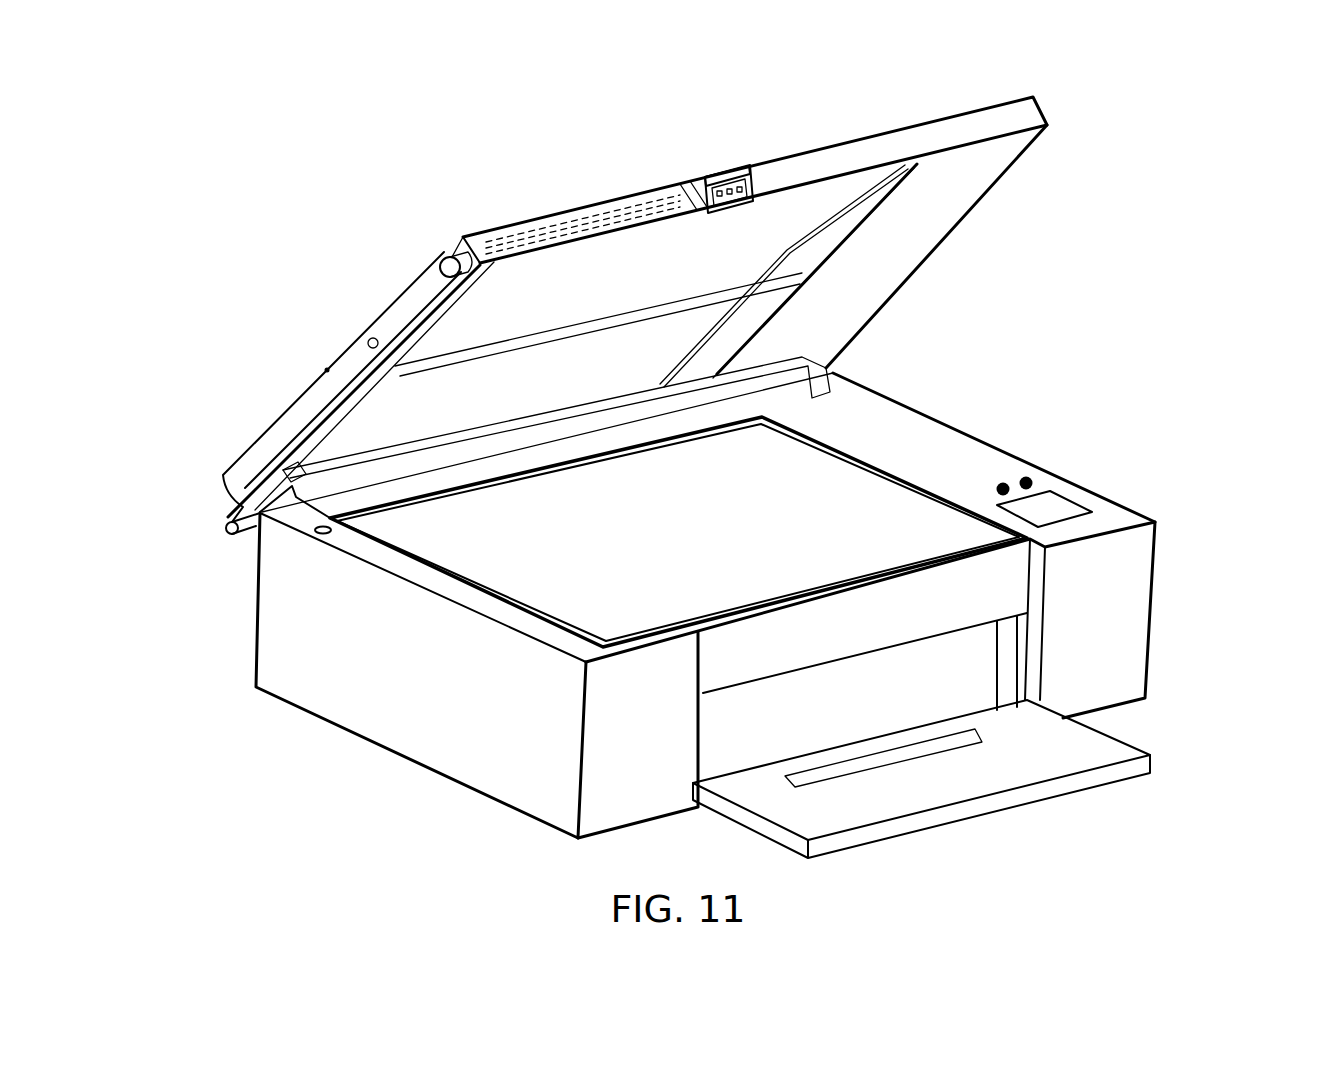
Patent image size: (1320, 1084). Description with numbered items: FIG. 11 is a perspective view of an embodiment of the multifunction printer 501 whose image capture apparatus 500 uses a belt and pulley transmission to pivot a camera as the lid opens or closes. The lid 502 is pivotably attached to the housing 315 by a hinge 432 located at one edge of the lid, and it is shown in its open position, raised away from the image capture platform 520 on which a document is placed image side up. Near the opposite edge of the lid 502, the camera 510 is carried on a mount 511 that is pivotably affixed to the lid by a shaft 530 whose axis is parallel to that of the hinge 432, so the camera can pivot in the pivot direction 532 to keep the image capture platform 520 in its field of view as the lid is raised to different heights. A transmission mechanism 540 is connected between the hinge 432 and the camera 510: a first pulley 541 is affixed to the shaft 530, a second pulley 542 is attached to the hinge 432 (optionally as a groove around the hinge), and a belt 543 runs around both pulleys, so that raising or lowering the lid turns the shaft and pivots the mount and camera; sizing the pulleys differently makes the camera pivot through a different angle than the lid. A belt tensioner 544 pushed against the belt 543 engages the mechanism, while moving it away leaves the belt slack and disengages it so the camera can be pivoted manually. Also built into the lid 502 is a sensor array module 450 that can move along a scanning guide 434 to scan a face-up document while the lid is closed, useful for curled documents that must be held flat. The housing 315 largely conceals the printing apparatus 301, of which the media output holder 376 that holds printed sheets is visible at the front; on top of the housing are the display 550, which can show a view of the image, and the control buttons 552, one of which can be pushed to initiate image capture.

The image capture apparatus 500 is at (1108, 318).
The multifunction printer 501 is at (277, 142).
The lid 502 is at (960, 187).
The camera 510 is at (730, 214).
The mount 511 is at (712, 180).
The image capture platform 520 is at (818, 426).
The shaft 530 is at (596, 222).
The pivot direction 532 is at (403, 273).
The transmission mechanism 540 is at (338, 328).
The first pulley 541 is at (458, 248).
The second pulley 542 is at (226, 529).
The belt 543 is at (318, 404).
The belt tensioner 544 is at (373, 337).
The sensor array module 450 is at (822, 230).
The scanning guide 434 is at (785, 297).
The hinge 432 is at (258, 532).
The printing apparatus 301 is at (368, 767).
The housing 315 is at (365, 708).
The media output holder 376 is at (770, 803).
The display 550 is at (1066, 506).
The control buttons 552 is at (1027, 478).